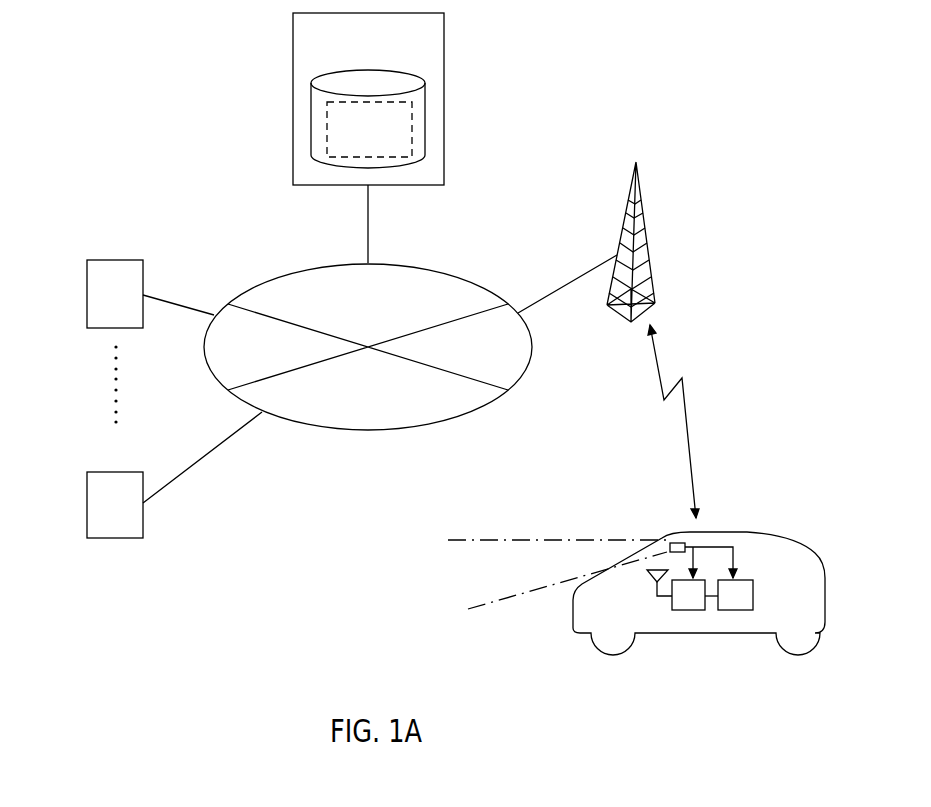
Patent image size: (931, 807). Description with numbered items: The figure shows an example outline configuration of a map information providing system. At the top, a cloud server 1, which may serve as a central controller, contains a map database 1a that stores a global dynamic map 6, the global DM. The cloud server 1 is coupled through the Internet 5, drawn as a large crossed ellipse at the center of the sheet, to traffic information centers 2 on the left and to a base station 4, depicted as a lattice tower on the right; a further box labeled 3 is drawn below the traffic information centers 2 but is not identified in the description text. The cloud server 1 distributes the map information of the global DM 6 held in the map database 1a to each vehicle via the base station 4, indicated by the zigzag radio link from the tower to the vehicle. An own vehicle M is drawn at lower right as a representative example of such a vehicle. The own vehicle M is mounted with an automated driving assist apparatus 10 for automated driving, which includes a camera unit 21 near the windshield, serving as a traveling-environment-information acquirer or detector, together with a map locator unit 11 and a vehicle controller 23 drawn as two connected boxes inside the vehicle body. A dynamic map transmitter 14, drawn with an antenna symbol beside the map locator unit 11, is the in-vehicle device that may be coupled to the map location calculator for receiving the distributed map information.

The cloud server 1 is at (444, 47).
The map database 1a is at (425, 140).
The global dynamic map 6 is at (412, 105).
The Internet 5 is at (368, 430).
The traffic information centers 2 is at (87, 295).
The infrastructure device 3 is at (87, 507).
The base station 4 is at (647, 248).
The own vehicle M is at (753, 532).
The automated driving assist apparatus 10 is at (762, 580).
The camera unit 21 is at (671, 543).
The map locator unit 11 is at (688, 614).
The vehicle controller 23 is at (741, 614).
The dynamic map transmitter 14 is at (657, 591).